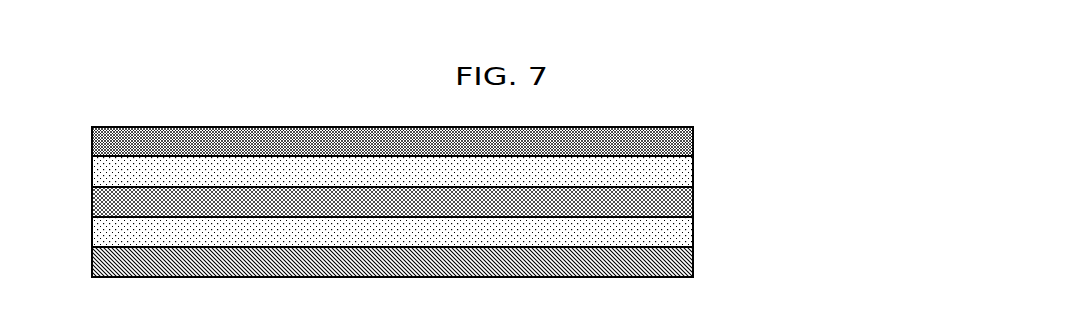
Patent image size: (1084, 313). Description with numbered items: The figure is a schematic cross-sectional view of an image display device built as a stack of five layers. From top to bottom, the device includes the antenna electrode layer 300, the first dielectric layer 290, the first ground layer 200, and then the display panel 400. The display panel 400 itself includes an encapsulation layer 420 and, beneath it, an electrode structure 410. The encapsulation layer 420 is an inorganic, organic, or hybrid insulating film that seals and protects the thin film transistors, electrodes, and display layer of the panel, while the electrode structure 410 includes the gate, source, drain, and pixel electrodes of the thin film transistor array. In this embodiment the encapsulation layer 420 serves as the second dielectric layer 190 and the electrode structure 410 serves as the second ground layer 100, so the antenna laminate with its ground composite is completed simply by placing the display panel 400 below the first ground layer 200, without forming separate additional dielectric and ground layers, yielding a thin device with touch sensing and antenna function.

The antenna electrode layer 300 is at (685, 140).
The first dielectric layer 290 is at (685, 172).
The first ground layer 200 is at (685, 200).
The encapsulation layer 420 is at (471, 232).
The second dielectric layer 190 is at (685, 234).
The electrode structure 410 is at (471, 262).
The second ground layer 100 is at (685, 262).
The display panel 400 is at (502, 247).